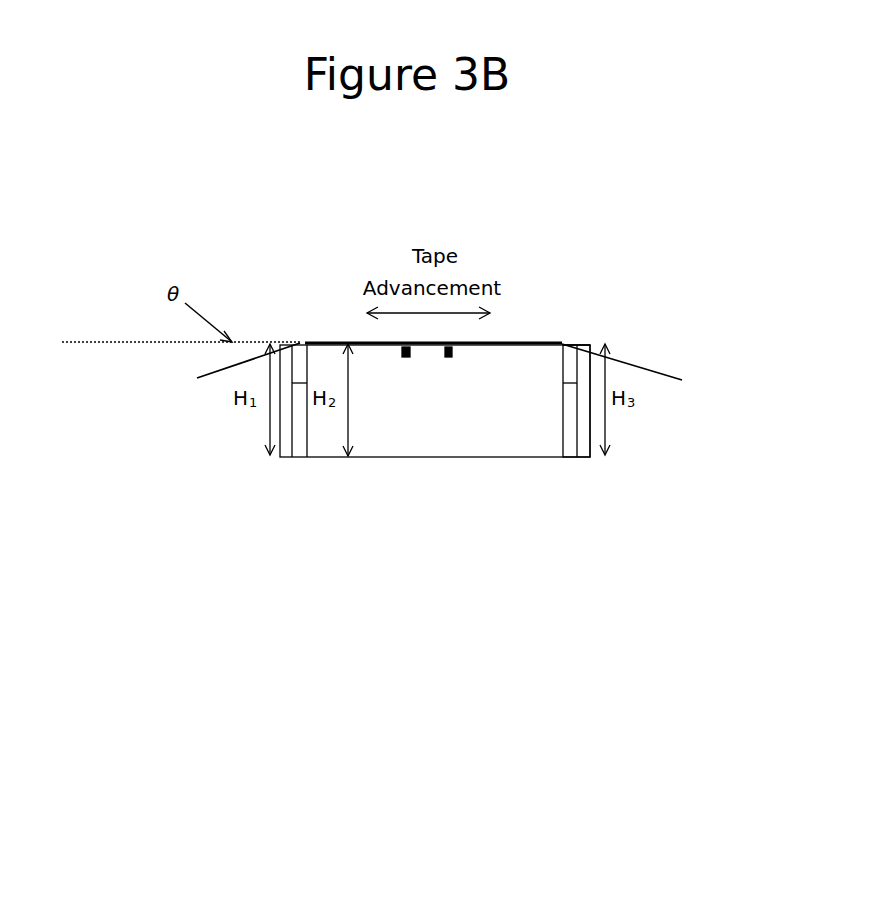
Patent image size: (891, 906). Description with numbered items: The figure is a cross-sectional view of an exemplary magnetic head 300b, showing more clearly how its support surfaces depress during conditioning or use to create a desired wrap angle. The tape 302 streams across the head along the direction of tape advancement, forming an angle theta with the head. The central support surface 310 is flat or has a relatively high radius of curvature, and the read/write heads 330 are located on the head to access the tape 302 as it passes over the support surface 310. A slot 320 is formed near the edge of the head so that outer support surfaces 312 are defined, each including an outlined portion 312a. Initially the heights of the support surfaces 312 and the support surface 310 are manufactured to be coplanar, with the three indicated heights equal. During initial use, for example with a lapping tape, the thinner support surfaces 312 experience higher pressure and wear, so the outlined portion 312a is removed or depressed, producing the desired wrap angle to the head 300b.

The magnetic head 300b is at (702, 462).
The tape 302 is at (215, 370).
The support surface 310 is at (503, 350).
The support surfaces 312 is at (587, 407).
The outlined portion 312a is at (588, 340).
The slot 320 is at (570, 363).
The read/write heads 330 is at (447, 358).